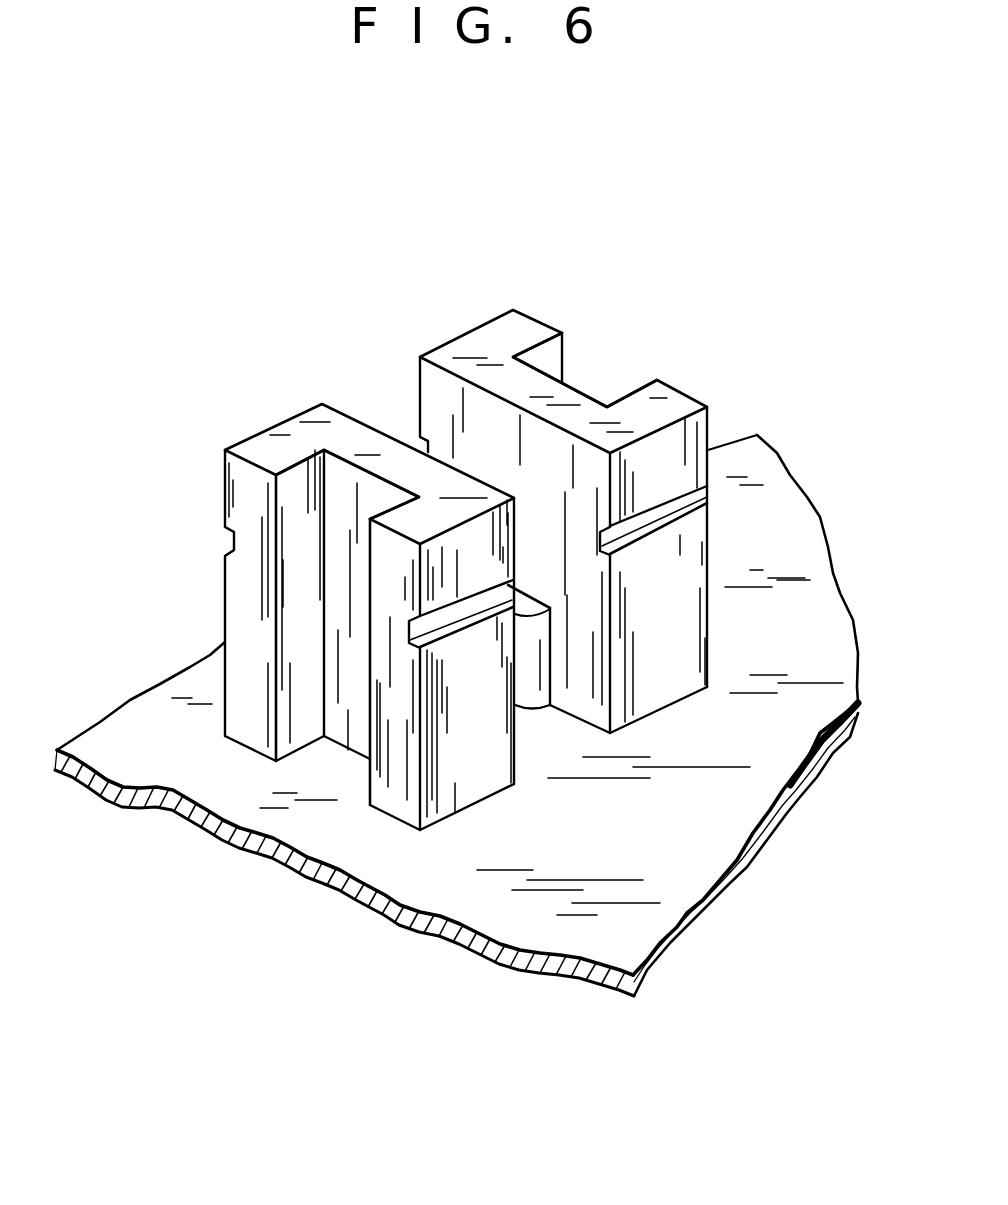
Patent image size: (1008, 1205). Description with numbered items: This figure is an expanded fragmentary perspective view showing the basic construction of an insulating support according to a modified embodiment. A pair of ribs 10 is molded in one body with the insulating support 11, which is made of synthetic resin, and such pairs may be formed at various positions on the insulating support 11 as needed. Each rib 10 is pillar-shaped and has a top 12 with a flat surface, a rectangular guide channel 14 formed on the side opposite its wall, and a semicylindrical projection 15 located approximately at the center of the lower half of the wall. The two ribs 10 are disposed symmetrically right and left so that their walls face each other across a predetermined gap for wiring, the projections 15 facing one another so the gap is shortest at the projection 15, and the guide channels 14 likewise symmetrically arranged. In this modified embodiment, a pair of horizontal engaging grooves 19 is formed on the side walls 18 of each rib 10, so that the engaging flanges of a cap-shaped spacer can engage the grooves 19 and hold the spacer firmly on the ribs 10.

The rib 10 is at (650, 257).
The insulating support 11 is at (492, 900).
The top 12 is at (518, 322).
The guide channel 14 is at (607, 380).
The projection 15 is at (527, 660).
The side wall 18 is at (685, 585).
The engaging groove 19 is at (418, 440).